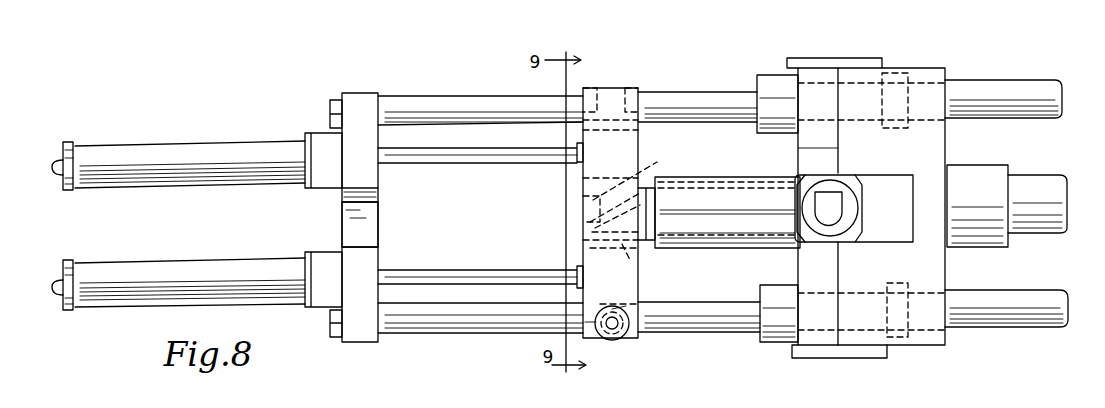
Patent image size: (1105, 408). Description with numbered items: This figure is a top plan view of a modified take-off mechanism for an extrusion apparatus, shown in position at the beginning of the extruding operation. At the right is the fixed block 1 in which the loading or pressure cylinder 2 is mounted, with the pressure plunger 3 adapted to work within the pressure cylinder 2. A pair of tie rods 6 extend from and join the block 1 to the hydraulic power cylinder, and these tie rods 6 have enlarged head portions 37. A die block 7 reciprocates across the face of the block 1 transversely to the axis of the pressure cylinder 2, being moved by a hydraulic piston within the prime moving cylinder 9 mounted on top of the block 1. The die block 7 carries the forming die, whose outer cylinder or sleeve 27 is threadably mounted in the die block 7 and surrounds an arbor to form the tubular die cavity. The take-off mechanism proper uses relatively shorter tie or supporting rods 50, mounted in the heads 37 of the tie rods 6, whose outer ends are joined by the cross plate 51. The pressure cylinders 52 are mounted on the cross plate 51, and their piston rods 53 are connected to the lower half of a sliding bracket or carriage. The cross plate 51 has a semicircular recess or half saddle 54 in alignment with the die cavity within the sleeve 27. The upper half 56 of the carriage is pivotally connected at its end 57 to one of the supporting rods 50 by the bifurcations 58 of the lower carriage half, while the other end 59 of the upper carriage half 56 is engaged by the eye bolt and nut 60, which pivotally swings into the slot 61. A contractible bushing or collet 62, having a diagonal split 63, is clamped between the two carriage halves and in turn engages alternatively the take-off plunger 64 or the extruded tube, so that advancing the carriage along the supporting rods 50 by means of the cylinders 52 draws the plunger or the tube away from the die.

The fixed block 1 is at (930, 150).
The pressure cylinder 2 is at (975, 180).
The pressure plunger 3 is at (1028, 183).
The tie rods 6 is at (990, 90).
The die block 7 is at (800, 148).
The prime moving cylinder 9 is at (847, 197).
The outer sleeve 27 is at (707, 177).
The enlarged head portions 37 is at (769, 80).
The supporting rods 50 is at (680, 96).
The cross plate 51 is at (368, 299).
The pressure cylinders 52 is at (207, 153).
The piston rods 53 is at (461, 162).
The half saddle 54 is at (365, 234).
The upper carriage half 56 is at (638, 153).
The pivot end 57 is at (612, 88).
The bifurcations 58 is at (592, 90).
The other end 59 is at (636, 337).
The eye bolt and nut 60 is at (613, 341).
The slot 61 is at (641, 307).
The collet 62 is at (640, 258).
The diagonal split 63 is at (636, 176).
The take-off plunger 64 is at (600, 236).